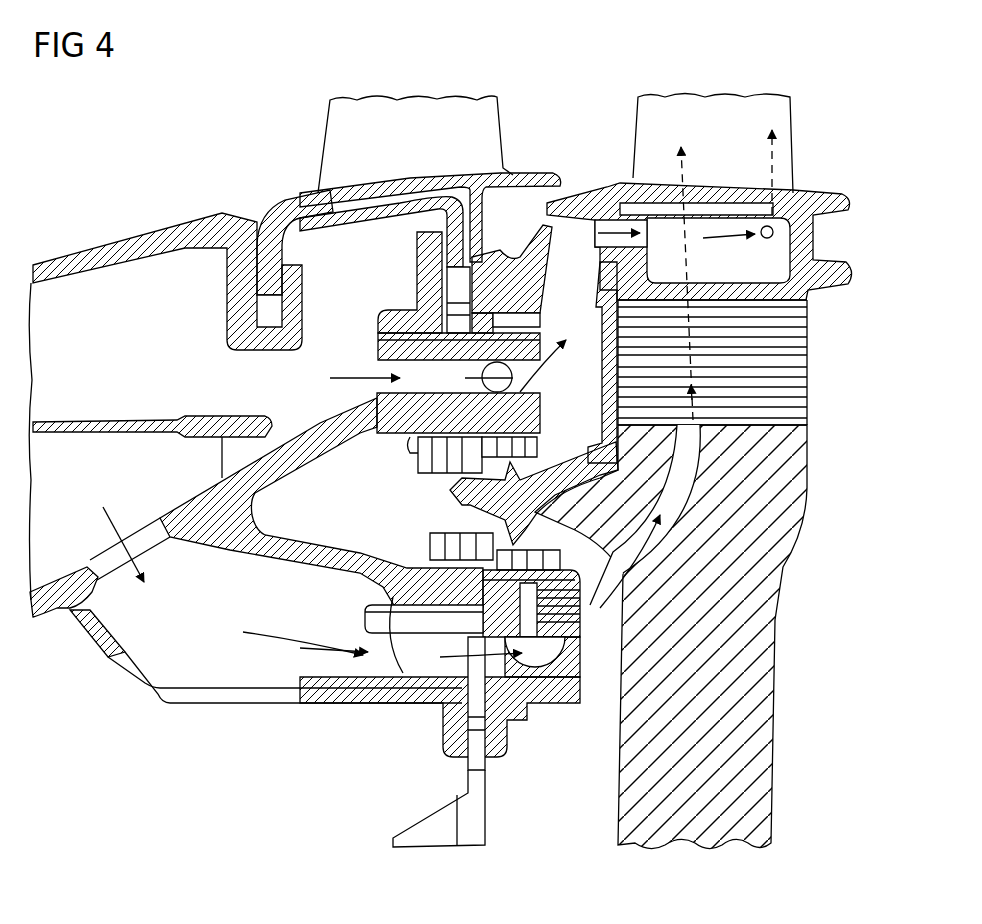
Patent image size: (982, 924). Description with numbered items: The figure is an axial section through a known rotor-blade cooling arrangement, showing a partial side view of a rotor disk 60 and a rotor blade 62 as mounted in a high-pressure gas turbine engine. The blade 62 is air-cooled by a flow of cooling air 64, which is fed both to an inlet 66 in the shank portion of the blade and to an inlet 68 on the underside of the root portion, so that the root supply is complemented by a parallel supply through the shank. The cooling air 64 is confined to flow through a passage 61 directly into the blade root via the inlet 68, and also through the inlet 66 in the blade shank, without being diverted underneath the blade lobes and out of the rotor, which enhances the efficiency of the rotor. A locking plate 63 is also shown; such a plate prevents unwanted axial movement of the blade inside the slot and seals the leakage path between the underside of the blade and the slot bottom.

The rotor disk 60 is at (765, 722).
The passage 61 is at (693, 505).
The rotor blade 62 is at (742, 101).
The locking plate 63 is at (605, 330).
The cooling air 64 is at (357, 373).
The inlet 66 is at (571, 283).
The inlet 68 is at (700, 427).